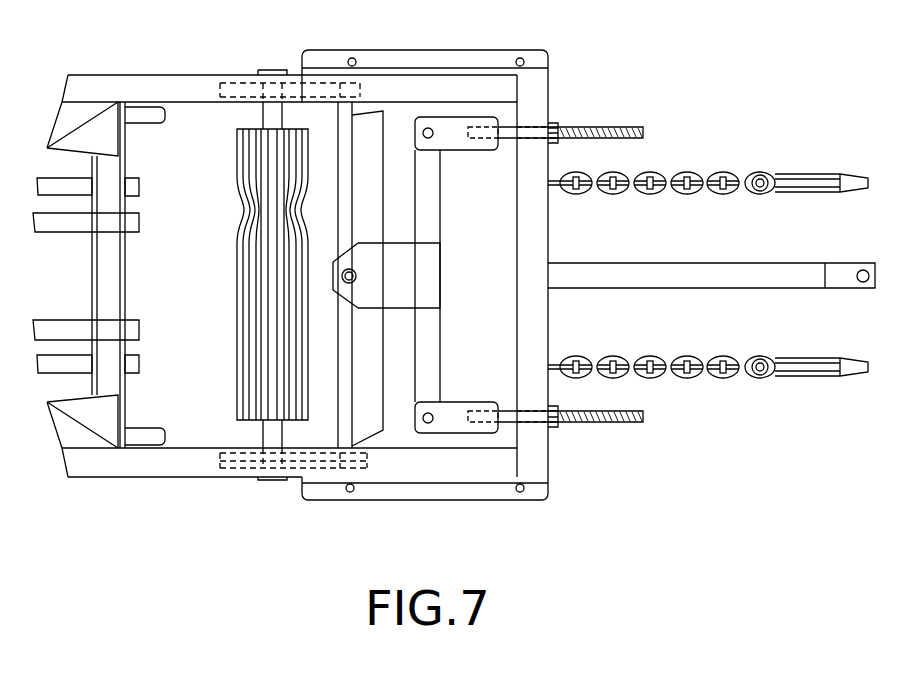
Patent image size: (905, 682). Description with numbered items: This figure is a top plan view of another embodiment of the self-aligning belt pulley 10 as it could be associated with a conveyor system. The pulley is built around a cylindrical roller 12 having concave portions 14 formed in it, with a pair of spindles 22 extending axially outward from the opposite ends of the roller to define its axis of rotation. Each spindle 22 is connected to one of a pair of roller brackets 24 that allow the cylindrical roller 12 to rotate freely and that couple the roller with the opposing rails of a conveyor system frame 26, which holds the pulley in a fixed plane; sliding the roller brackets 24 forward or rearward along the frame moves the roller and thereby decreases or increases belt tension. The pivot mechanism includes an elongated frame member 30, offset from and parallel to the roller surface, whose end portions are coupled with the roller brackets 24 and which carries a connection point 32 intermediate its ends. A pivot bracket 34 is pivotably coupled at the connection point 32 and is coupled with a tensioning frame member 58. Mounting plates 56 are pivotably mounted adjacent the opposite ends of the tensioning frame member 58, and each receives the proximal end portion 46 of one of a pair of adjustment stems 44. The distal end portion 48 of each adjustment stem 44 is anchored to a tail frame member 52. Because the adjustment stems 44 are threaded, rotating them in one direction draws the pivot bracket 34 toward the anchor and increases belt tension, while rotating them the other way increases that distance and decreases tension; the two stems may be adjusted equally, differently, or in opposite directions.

The self-aligning belt pulley 10 is at (740, 500).
The cylindrical roller 12 is at (282, 283).
The concave portions 14 is at (205, 232).
The spindles 22 is at (272, 118).
The roller brackets 24 is at (257, 483).
The conveyor system frame 26 is at (188, 478).
The elongated frame member 30 is at (348, 118).
The connection point 32 is at (357, 288).
The pivot bracket 34 is at (423, 273).
The adjustment stems 44 is at (571, 139).
The proximal end portion 46 is at (484, 170).
The distal end portion 48 is at (643, 131).
The tail frame member 52 is at (556, 222).
The mounting plate 56 is at (455, 118).
The tensioning frame member 58 is at (433, 327).